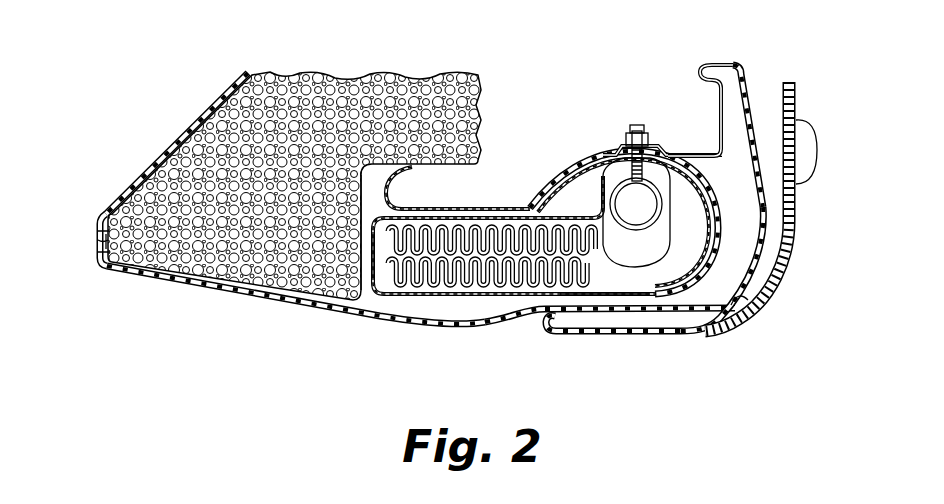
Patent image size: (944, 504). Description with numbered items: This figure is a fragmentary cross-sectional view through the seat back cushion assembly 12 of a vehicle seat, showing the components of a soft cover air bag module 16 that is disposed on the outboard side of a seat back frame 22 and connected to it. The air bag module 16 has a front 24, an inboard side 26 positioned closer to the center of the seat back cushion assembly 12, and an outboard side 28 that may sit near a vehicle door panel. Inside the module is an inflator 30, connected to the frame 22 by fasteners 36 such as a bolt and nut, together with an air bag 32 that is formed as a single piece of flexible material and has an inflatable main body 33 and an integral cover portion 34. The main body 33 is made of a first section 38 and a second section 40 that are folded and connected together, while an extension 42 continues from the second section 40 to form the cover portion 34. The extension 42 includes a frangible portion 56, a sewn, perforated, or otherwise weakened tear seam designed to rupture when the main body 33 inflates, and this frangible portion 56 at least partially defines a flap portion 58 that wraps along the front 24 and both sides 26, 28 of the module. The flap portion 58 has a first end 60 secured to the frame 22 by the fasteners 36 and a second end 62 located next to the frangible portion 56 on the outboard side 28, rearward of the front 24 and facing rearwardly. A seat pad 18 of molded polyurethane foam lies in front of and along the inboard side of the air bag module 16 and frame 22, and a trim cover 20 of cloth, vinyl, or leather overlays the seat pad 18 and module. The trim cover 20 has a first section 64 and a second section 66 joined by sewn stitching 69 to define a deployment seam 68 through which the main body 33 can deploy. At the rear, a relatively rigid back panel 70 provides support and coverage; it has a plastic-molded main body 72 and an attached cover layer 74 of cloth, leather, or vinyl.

The seat back cushion assembly 12 is at (150, 82).
The air bag module 16 is at (727, 198).
The seat pad 18 is at (203, 206).
The trim cover 20 is at (130, 288).
The seat back frame 22 is at (719, 130).
The front 24 is at (360, 236).
The inboard side 26 is at (528, 206).
The outboard side 28 is at (468, 308).
The inflator 30 is at (626, 214).
The air bag 32 is at (710, 276).
The main body 33 is at (678, 312).
The cover portion 34 is at (382, 292).
The fasteners 36 is at (637, 128).
The first section 38 is at (447, 295).
The second section 40 is at (416, 228).
The extension 42 is at (567, 179).
The frangible portion 56 is at (594, 328).
The flap portion 58 is at (487, 298).
The first end 60 is at (601, 164).
The second end 62 is at (601, 303).
The first section 64 is at (157, 158).
The second section 66 is at (250, 297).
The deployment seam 68 is at (86, 247).
The sewn stitching 69 is at (100, 237).
The back panel 70 is at (755, 292).
The main body 72 is at (752, 306).
The cover layer 74 is at (804, 200).